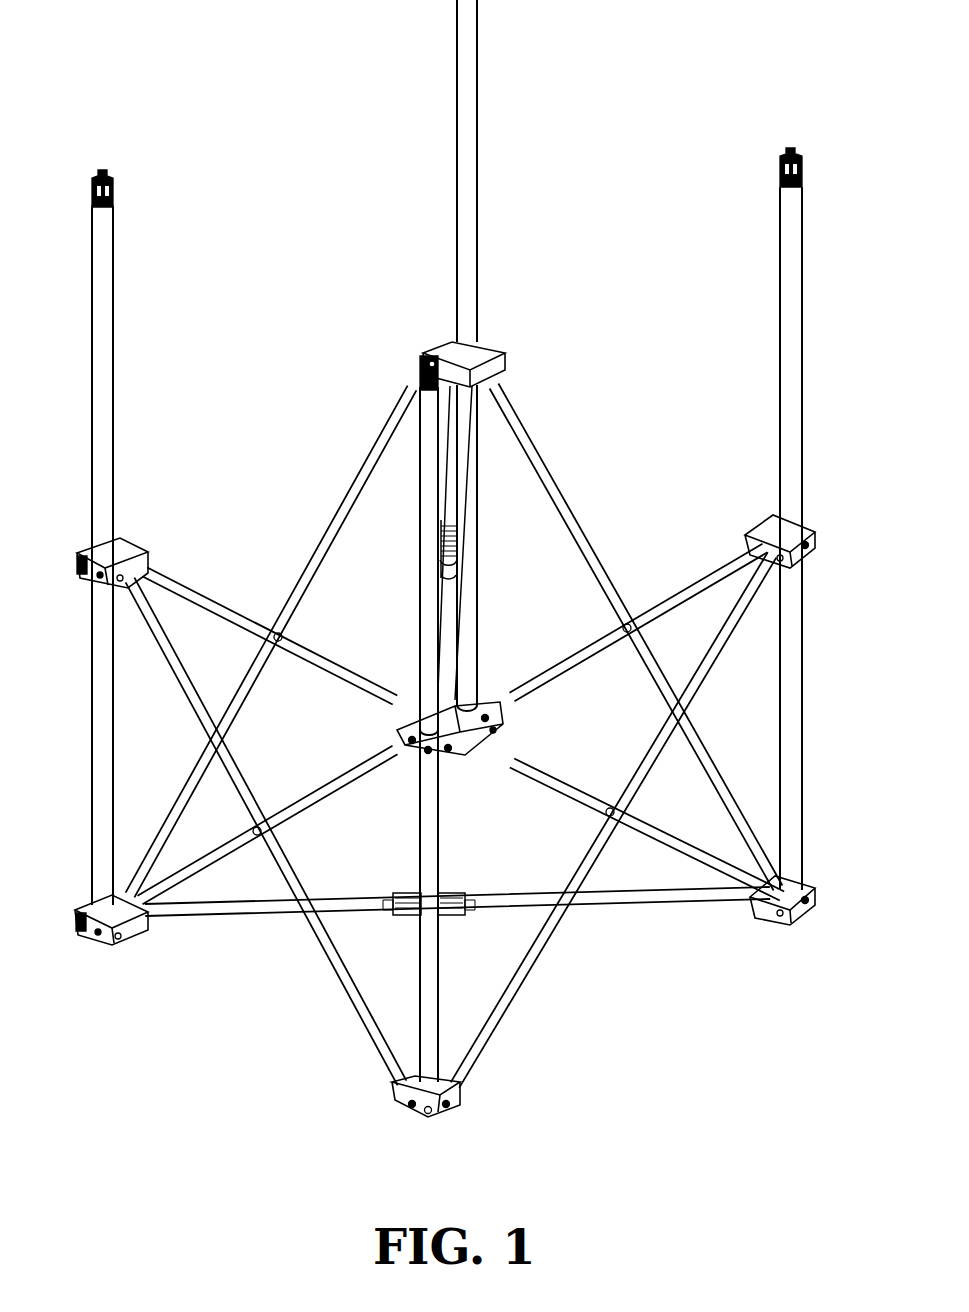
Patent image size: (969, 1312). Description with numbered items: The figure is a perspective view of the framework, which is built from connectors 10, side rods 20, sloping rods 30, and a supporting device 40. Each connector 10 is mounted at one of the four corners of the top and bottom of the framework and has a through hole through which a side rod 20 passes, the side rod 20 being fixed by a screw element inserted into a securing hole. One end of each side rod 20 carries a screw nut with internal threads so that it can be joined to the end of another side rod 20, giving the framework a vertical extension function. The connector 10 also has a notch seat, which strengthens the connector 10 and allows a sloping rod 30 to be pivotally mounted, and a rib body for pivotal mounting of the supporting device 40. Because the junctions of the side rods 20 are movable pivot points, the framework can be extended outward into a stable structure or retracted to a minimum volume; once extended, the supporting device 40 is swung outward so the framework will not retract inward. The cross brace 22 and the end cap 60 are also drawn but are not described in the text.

The connector 10 is at (136, 546).
The side rod 20 is at (112, 360).
The cross brace 22 is at (627, 622).
The sloping rod 30 is at (556, 468).
The supporting device 40 is at (497, 878).
The end cap connector 60 is at (113, 196).